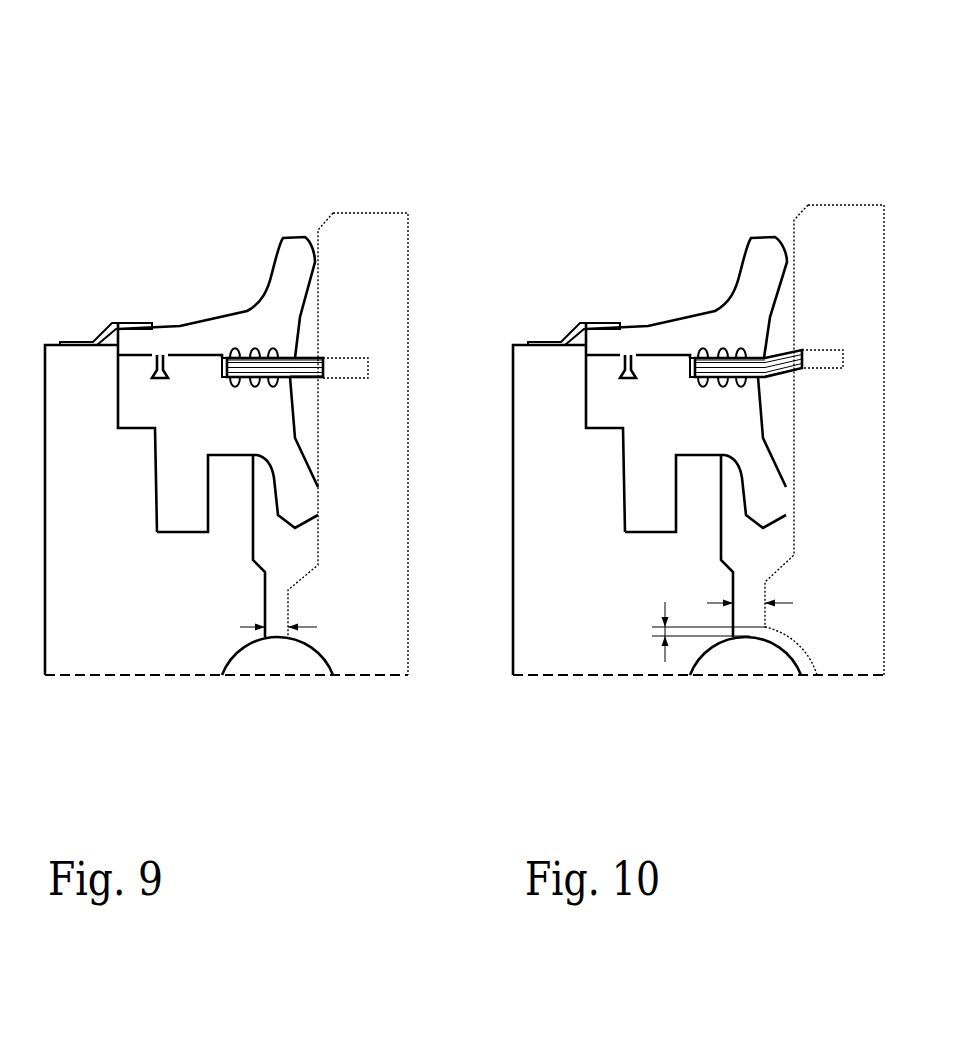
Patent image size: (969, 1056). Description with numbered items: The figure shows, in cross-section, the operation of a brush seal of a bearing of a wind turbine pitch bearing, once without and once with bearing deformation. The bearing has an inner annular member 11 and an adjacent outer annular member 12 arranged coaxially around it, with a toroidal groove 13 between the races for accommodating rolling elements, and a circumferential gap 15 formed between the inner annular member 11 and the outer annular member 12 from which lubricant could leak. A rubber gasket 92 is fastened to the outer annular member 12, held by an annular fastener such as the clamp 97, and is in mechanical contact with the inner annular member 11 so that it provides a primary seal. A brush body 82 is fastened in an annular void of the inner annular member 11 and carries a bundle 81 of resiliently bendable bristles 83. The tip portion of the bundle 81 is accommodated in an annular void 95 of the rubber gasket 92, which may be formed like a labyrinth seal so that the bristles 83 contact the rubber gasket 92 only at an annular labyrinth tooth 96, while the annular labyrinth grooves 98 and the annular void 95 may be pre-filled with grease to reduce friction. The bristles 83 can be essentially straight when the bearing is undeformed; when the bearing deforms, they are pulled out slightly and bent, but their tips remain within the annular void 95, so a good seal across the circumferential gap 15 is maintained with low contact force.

In FIG. 9, the inner annular member 11 is at (385, 647).
In FIG. 10, the inner annular member 11 is at (858, 648).
In FIG. 9, the outer annular member 12 is at (175, 637).
In FIG. 10, the outer annular member 12 is at (583, 648).
In FIG. 9, the toroidal groove 13 is at (280, 662).
In FIG. 10, the toroidal groove 13 is at (743, 667).
In FIG. 9, the circumferential gap 15 is at (277, 603).
In FIG. 10, the circumferential gap 15 is at (745, 592).
In FIG. 9, the bundle of resiliently bendable bristles 81 is at (307, 352).
In FIG. 10, the bundle of resiliently bendable bristles 81 is at (776, 349).
In FIG. 9, the brush body 82 is at (353, 368).
In FIG. 10, the brush body 82 is at (833, 352).
In FIG. 9, the resiliently bendable bristles 83 is at (303, 375).
In FIG. 10, the resiliently bendable bristles 83 is at (785, 372).
In FIG. 9, the rubber gasket 92 is at (163, 327).
In FIG. 10, the rubber gasket 92 is at (631, 327).
In FIG. 10, the annular void 95 is at (693, 344).
In FIG. 9, the annular labyrinth tooth 96 is at (247, 312).
In FIG. 10, the annular labyrinth tooth 96 is at (715, 312).
In FIG. 9, the clamp 97 is at (93, 343).
In FIG. 10, the clamp 97 is at (561, 343).
In FIG. 9, the annular labyrinth grooves 98 is at (240, 345).
In FIG. 10, the annular labyrinth grooves 98 is at (724, 388).